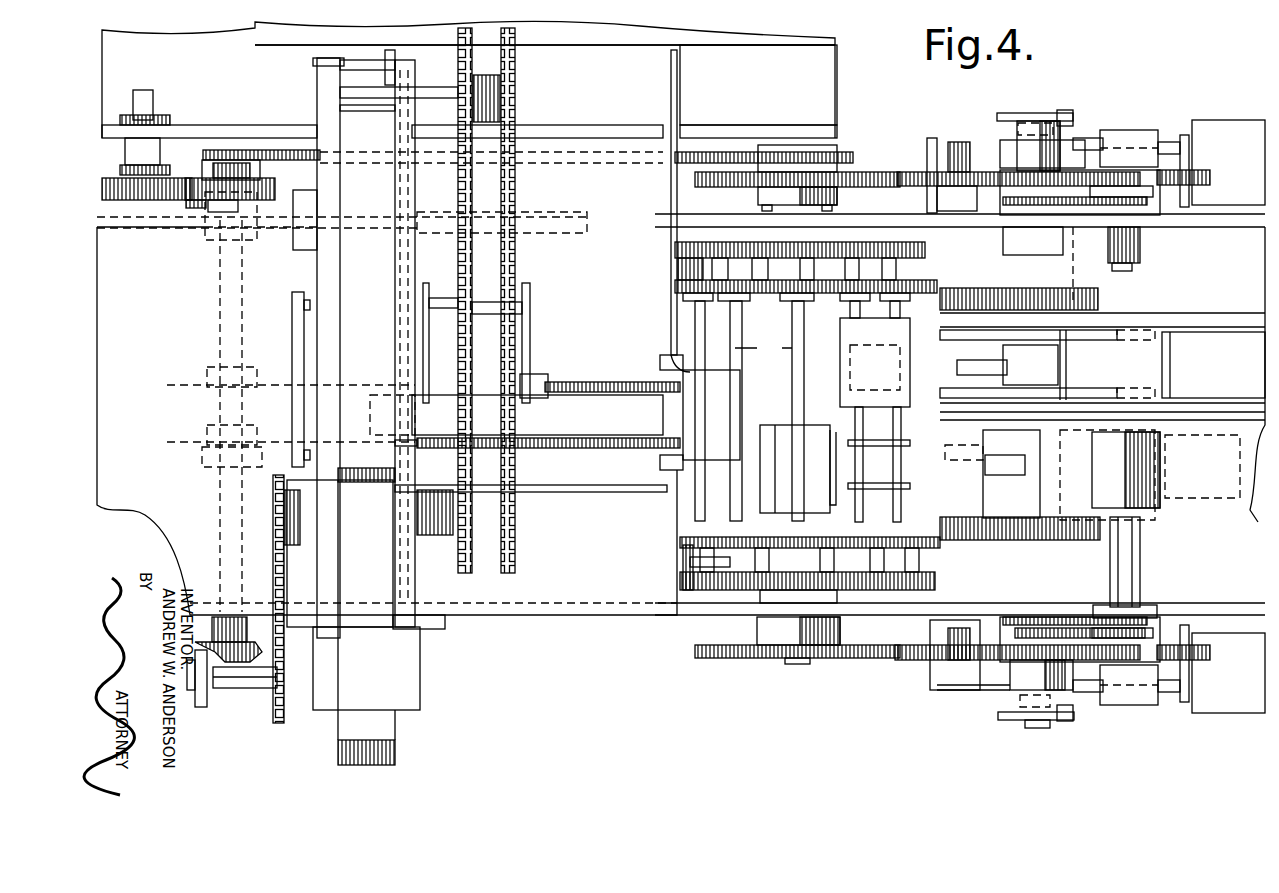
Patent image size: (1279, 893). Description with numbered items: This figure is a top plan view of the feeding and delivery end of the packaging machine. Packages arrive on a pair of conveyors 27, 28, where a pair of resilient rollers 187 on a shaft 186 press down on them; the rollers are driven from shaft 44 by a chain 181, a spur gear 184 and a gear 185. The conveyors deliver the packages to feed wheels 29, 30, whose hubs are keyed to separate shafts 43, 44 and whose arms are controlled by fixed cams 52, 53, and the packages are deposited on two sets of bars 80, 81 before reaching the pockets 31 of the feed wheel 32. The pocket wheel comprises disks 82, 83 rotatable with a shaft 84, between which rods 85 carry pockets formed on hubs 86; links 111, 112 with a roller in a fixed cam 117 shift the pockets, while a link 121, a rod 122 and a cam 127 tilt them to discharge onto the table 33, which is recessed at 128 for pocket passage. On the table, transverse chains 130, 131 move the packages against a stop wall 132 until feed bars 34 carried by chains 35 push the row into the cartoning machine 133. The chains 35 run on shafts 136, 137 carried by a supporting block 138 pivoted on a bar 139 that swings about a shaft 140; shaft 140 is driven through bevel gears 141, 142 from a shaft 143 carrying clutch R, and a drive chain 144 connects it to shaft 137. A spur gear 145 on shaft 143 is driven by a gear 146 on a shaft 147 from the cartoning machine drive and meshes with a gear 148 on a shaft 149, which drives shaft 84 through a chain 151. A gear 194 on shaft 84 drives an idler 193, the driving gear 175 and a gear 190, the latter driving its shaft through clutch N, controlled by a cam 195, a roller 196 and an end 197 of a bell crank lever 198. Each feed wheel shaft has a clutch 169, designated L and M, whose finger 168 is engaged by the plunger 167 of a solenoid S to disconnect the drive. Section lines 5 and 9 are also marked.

The section line 5 is at (672, 508).
The section line 9 is at (652, 416).
The conveyor 27 is at (1252, 505).
The conveyor 28 is at (1224, 332).
The feed wheel 29 is at (1023, 486).
The feed wheel 30 is at (1034, 347).
The pocket 31 is at (826, 430).
The feed wheel 32 is at (674, 285).
The table 33 is at (596, 309).
The feed bar 34 is at (583, 125).
The chain 35 is at (505, 205).
The shaft 43 is at (1043, 728).
The shaft 44 is at (1042, 113).
The fixed cam 52 is at (968, 292).
The fixed cam 53 is at (983, 541).
The bars 80 is at (868, 447).
The bars 81 is at (862, 345).
The disk 82 is at (940, 286).
The disk 83 is at (930, 541).
The shaft 84 is at (793, 145).
The rod 85 is at (800, 328).
The hub 86 is at (805, 425).
The link 111 is at (760, 258).
The link 112 is at (680, 263).
The fixed cam 117 is at (923, 250).
The link 121 is at (688, 562).
The rod 122 is at (763, 348).
The cam 127 is at (935, 585).
The recess 128 is at (658, 463).
The transverse chain 130 is at (592, 382).
The transverse chain 131 is at (552, 450).
The stop wall 132 is at (415, 469).
The cartoning machine 133 is at (422, 43).
The shaft 136 is at (433, 88).
The shaft 137 is at (300, 542).
The supporting block 138 is at (376, 296).
The bar 139 is at (393, 580).
The shaft 140 is at (258, 690).
The bevel gear 141 is at (215, 700).
The bevel gear 142 is at (214, 640).
The shaft 143 is at (222, 504).
The drive chain 144 is at (284, 580).
The spur gear 145 is at (193, 208).
The gear 146 is at (130, 200).
The shaft 147 is at (155, 104).
The gear 148 is at (275, 186).
The shaft 149 is at (225, 150).
The chain 151 is at (843, 152).
The solenoid plunger 167 is at (1185, 135).
The finger 168 is at (1068, 136).
The clutch 169 is at (1010, 160).
The driving gear 175 is at (950, 145).
The chain 181 is at (1003, 200).
The spur gear 184 is at (1090, 230).
The gear 185 is at (1145, 200).
The shaft 186 is at (1134, 269).
The resilient roller 187 is at (1124, 473).
The gear 190 is at (1206, 185).
The idler 193 is at (910, 186).
The gear 194 is at (872, 186).
The cam 195 is at (1010, 113).
The roller 196 is at (1075, 112).
The end of bell crank lever 197 is at (978, 690).
The bell crank lever 198 is at (964, 142).
The clutch L is at (1018, 125).
The clutch M is at (1015, 712).
The clutch N is at (1078, 140).
The clutch R is at (203, 166).
The solenoid S is at (1232, 125).